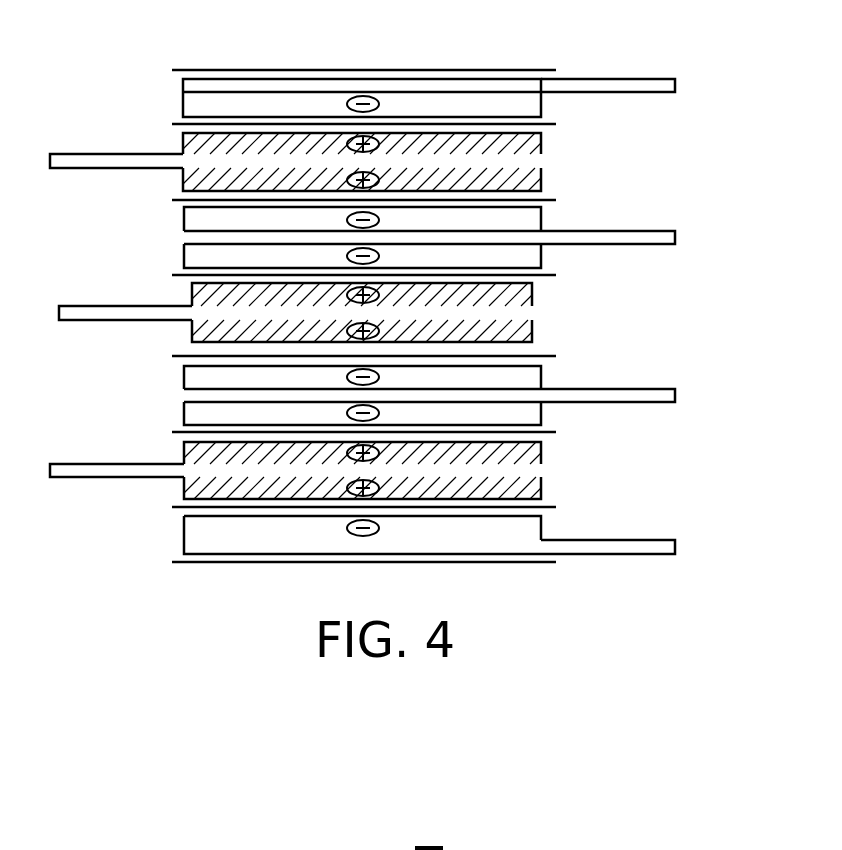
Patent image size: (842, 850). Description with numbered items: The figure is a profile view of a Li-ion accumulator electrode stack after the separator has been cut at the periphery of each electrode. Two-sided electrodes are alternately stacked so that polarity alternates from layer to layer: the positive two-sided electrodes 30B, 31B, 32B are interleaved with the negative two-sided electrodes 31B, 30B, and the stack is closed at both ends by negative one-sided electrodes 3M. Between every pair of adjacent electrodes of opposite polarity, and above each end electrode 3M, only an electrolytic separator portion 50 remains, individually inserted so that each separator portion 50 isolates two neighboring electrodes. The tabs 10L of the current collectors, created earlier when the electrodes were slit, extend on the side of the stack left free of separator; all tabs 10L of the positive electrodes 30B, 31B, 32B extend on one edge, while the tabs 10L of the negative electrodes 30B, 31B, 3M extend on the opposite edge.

The tab of the current collector 10L is at (625, 88).
The electrolytic separator portion 50 is at (172, 124).
The negative one-sided electrode 3M is at (687, 79).
The positive two-sided electrode 32B is at (560, 133).
The two-sided electrode 31B is at (683, 207).
The two-sided electrode 30B is at (550, 283).